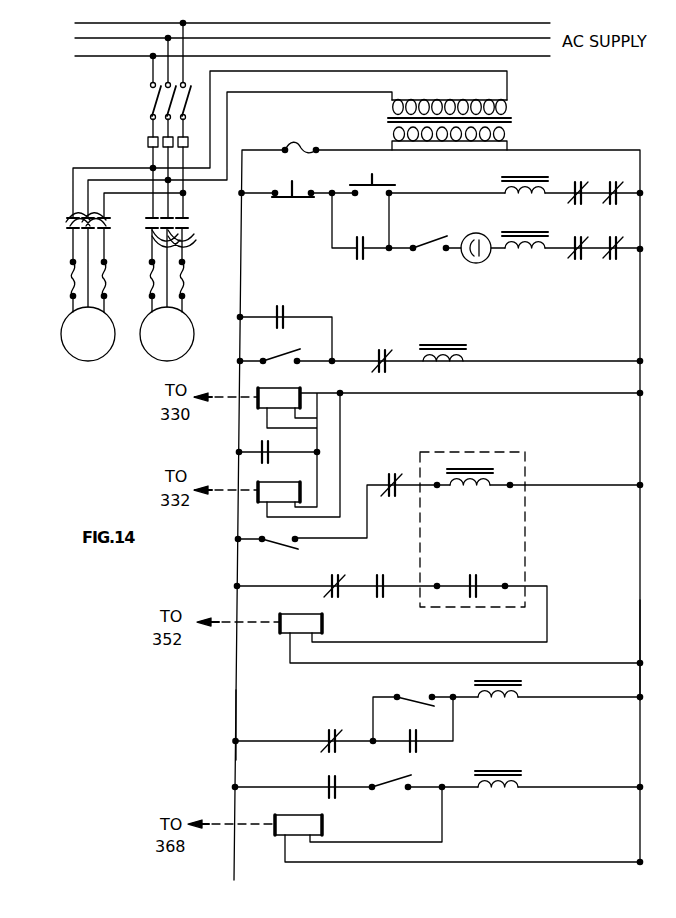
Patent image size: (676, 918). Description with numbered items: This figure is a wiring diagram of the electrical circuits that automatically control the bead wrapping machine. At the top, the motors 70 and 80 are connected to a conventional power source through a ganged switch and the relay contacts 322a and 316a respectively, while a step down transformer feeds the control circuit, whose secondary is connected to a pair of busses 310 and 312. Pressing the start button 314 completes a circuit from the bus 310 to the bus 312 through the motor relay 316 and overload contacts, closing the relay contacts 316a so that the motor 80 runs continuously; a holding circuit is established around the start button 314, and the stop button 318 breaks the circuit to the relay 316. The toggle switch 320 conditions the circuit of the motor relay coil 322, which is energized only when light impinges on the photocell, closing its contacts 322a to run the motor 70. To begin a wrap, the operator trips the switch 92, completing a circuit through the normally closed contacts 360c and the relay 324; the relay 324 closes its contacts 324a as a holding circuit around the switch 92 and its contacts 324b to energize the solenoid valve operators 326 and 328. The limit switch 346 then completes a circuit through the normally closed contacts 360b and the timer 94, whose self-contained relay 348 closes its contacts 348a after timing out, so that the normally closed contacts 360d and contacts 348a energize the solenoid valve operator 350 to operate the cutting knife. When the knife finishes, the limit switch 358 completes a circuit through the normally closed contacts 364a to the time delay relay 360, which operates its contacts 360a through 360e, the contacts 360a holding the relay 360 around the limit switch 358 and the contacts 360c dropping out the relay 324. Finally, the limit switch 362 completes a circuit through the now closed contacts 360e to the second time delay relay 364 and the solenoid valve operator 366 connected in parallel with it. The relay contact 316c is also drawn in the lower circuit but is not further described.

The motor 70 is at (71, 360).
The motor 80 is at (195, 336).
The switch 92 is at (291, 348).
The timer 94 is at (482, 452).
The bus 310 is at (235, 706).
The bus 312 is at (640, 625).
The start button 314 is at (383, 185).
The motor relay 316 is at (535, 181).
The relay contacts 316a is at (180, 224).
The relay contacts 316c is at (381, 613).
The stop button 318 is at (295, 188).
The toggle switch 320 is at (442, 237).
The motor relay coil 322 is at (534, 239).
The relay contacts 322a is at (72, 224).
The relay 324 is at (455, 348).
The normally open contacts 324a is at (286, 307).
The normally open contacts 324b is at (278, 440).
The solenoid valve operator 326 is at (301, 394).
The solenoid valve operator 328 is at (307, 478).
The limit switch 346 is at (282, 554).
The relay 348 is at (511, 474).
The timer contacts 348a is at (476, 578).
The solenoid valve operator 350 is at (291, 615).
The limit switch 358 is at (409, 695).
The time delay relay 360 is at (525, 694).
The normally open contacts 360a is at (416, 752).
The normally closed contacts 360b is at (389, 480).
The normally closed contacts 360c is at (383, 350).
The normally closed contacts 360d is at (350, 569).
The normally open contacts 360e is at (326, 786).
The limit switch 362 is at (398, 780).
The second time delay relay 364 is at (515, 778).
The normally closed contacts 364a is at (329, 726).
The solenoid valve operator 366 is at (322, 826).